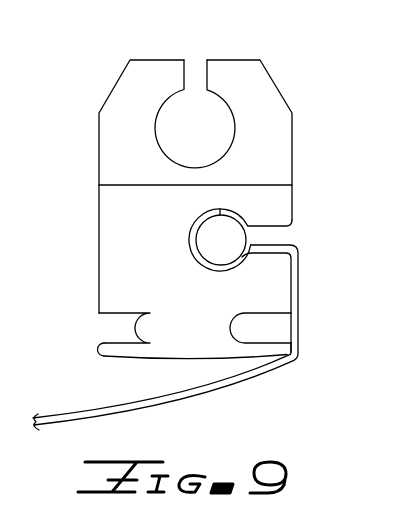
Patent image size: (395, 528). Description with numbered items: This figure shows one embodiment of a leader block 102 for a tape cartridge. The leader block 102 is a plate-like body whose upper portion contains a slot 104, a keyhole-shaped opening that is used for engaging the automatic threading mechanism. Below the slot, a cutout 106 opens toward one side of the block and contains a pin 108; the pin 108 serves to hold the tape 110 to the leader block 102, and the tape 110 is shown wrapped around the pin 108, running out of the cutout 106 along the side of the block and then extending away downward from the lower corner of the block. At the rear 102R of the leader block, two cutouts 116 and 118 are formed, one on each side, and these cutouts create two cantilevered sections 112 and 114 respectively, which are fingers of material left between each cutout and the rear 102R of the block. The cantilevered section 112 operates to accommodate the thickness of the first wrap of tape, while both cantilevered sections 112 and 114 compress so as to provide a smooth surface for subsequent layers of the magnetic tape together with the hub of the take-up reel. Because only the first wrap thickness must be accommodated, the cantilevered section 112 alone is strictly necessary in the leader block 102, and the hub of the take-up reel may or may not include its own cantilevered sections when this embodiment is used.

The leader block 102 is at (157, 227).
The slot 104 is at (200, 97).
The cutout 106 is at (282, 231).
The pin 108 is at (222, 249).
The tape 110 is at (122, 418).
The cantilevered section 112 is at (285, 343).
The cantilevered section 114 is at (105, 341).
The cutout 116 is at (280, 335).
The cutout 118 is at (125, 328).
The rear of the leader block 102R is at (162, 352).